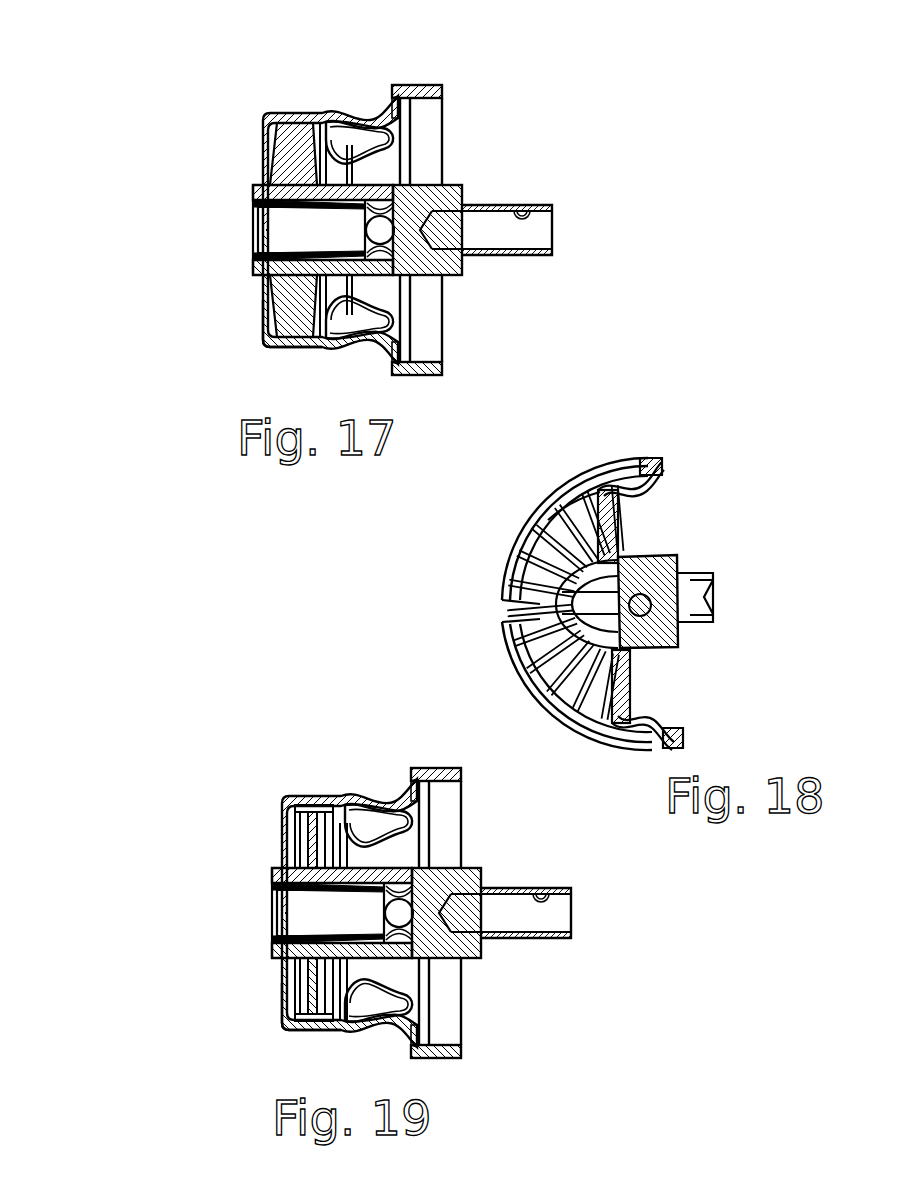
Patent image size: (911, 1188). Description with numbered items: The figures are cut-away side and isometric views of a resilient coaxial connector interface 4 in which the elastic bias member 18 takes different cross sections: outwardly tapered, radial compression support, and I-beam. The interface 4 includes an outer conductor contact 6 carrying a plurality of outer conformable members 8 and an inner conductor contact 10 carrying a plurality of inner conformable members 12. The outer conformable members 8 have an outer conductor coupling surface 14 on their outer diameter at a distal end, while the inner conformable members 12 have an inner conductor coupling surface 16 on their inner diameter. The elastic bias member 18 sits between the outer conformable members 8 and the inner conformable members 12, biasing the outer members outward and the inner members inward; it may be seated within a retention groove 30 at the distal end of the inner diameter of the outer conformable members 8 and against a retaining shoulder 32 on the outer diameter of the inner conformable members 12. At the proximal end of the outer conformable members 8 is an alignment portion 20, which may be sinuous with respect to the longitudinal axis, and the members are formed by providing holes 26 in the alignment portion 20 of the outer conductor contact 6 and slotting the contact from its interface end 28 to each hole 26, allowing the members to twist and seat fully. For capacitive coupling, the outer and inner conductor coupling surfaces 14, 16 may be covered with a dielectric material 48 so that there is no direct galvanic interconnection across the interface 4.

In FIG. 17, the resilient coaxial connector interface 4 is at (297, 77).
In FIG. 19, the resilient coaxial connector interface 4 is at (318, 757).
In FIG. 18, the resilient coaxial connector interface 4 is at (613, 447).
In FIG. 17, the outer conductor contact 6 is at (440, 85).
In FIG. 19, the outer conductor contact 6 is at (425, 768).
In FIG. 18, the outer conductor contact 6 is at (650, 457).
In FIG. 17, the outer conformable members 8 is at (220, 206).
In FIG. 19, the outer conformable members 8 is at (239, 892).
In FIG. 18, the outer conformable members 8 is at (679, 604).
In FIG. 17, the inner conductor contact 10 is at (463, 183).
In FIG. 19, the inner conductor contact 10 is at (482, 867).
In FIG. 18, the inner conductor contact 10 is at (683, 608).
In FIG. 17, the inner conformable members 12 is at (205, 230).
In FIG. 19, the inner conformable members 12 is at (223, 913).
In FIG. 18, the inner conformable members 12 is at (719, 635).
In FIG. 17, the outer conductor coupling surface 14 is at (285, 112).
In FIG. 19, the outer conductor coupling surface 14 is at (305, 797).
In FIG. 18, the outer conductor coupling surface 14 is at (628, 500).
In FIG. 17, the inner conductor coupling surface 16 is at (273, 243).
In FIG. 19, the inner conductor coupling surface 16 is at (292, 928).
In FIG. 18, the inner conductor coupling surface 16 is at (627, 652).
In FIG. 17, the elastic bias member 18 is at (287, 160).
In FIG. 19, the elastic bias member 18 is at (308, 845).
In FIG. 18, the elastic bias member 18 is at (537, 587).
In FIG. 17, the alignment portion 20 is at (385, 337).
In FIG. 19, the alignment portion 20 is at (400, 1022).
In FIG. 18, the alignment portion 20 is at (645, 492).
In FIG. 17, the holes 26 is at (378, 232).
In FIG. 19, the holes 26 is at (400, 918).
In FIG. 18, the interface end 28 is at (480, 622).
In FIG. 17, the retention groove 30 is at (277, 337).
In FIG. 19, the retention groove 30 is at (297, 1022).
In FIG. 18, the retention groove 30 is at (575, 500).
In FIG. 17, the retaining shoulder 32 is at (272, 282).
In FIG. 19, the retaining shoulder 32 is at (292, 968).
In FIG. 17, the dielectric material 48 is at (207, 206).
In FIG. 19, the dielectric material 48 is at (226, 892).
In FIG. 18, the dielectric material 48 is at (701, 604).